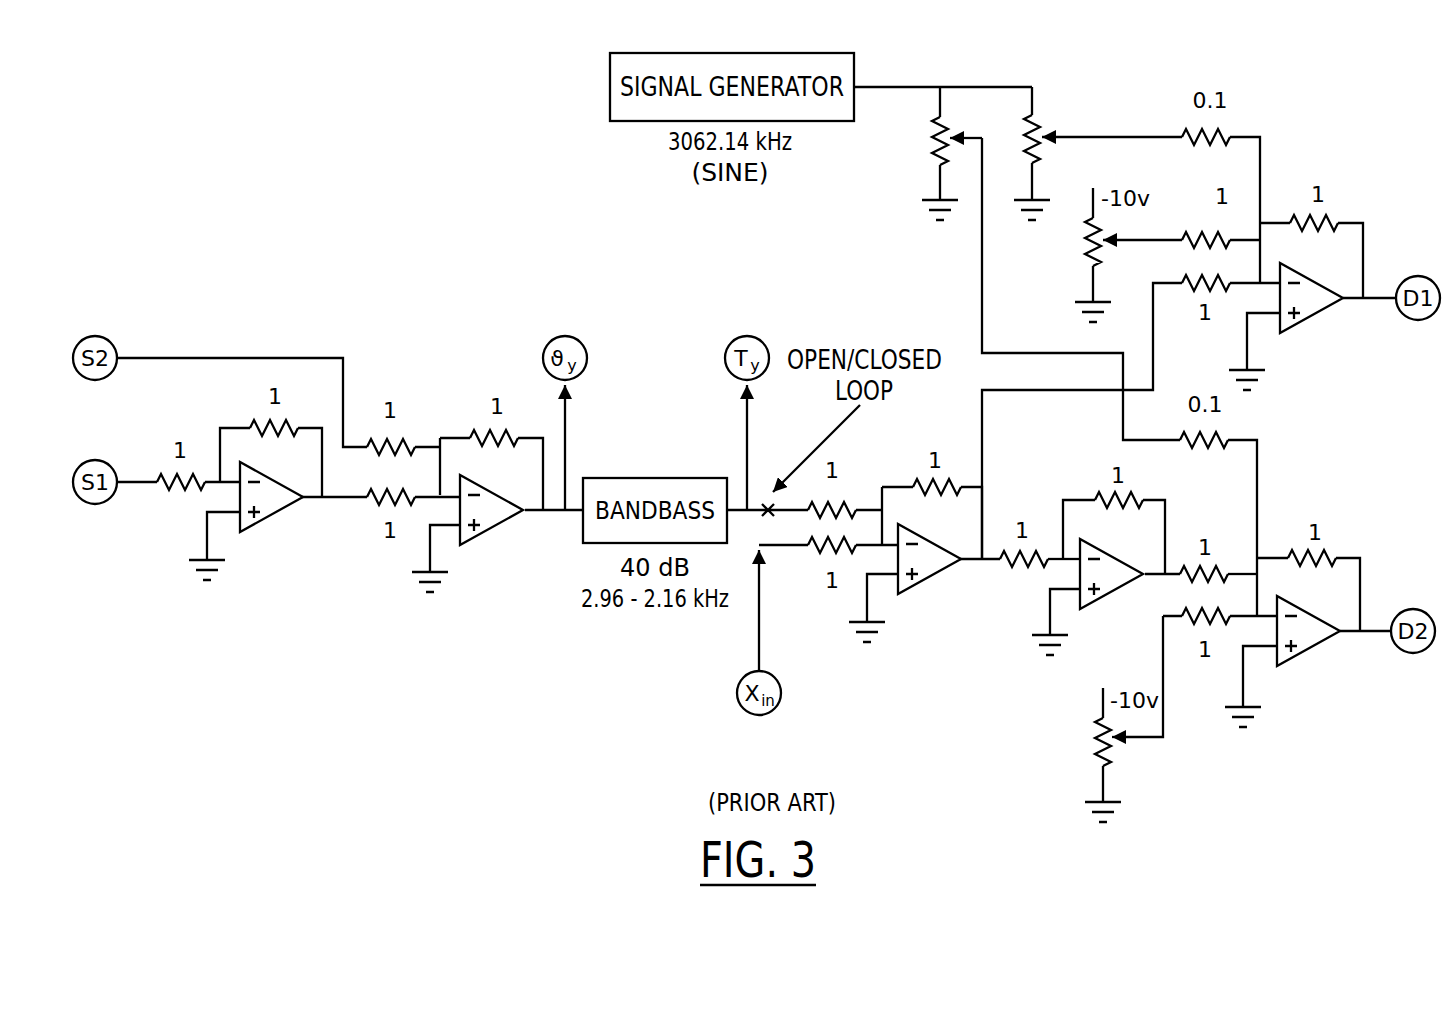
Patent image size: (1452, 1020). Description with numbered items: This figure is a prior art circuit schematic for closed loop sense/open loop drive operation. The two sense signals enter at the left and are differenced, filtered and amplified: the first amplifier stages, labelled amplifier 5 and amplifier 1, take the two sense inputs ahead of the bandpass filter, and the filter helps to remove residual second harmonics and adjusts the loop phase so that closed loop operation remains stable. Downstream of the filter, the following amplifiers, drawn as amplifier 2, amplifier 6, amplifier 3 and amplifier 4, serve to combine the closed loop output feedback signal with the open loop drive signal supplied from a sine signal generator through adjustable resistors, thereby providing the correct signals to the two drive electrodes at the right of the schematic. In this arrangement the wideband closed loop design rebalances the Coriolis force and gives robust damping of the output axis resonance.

The operational amplifier # 1 is at (497, 511).
The operational amplifier #2 / potentiometer # 2 is at (1015, 415).
The operational amplifier #3 / potentiometer # 3 is at (1238, 686).
The operational amplifier #4 / potentiometer # 4 is at (1205, 223).
The operational amplifier #5 / potentiometer # 5 is at (610, 318).
The operational amplifier # 6 is at (1106, 573).